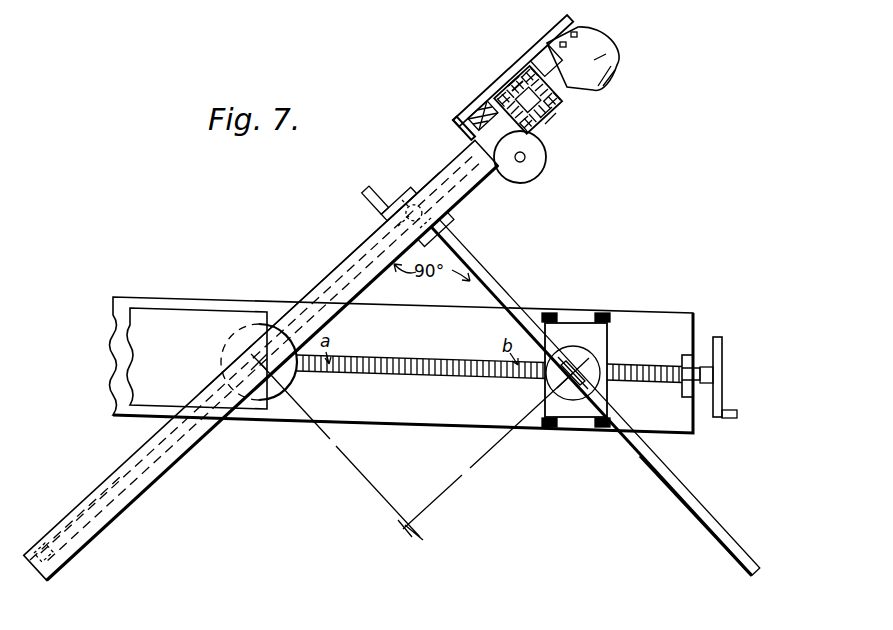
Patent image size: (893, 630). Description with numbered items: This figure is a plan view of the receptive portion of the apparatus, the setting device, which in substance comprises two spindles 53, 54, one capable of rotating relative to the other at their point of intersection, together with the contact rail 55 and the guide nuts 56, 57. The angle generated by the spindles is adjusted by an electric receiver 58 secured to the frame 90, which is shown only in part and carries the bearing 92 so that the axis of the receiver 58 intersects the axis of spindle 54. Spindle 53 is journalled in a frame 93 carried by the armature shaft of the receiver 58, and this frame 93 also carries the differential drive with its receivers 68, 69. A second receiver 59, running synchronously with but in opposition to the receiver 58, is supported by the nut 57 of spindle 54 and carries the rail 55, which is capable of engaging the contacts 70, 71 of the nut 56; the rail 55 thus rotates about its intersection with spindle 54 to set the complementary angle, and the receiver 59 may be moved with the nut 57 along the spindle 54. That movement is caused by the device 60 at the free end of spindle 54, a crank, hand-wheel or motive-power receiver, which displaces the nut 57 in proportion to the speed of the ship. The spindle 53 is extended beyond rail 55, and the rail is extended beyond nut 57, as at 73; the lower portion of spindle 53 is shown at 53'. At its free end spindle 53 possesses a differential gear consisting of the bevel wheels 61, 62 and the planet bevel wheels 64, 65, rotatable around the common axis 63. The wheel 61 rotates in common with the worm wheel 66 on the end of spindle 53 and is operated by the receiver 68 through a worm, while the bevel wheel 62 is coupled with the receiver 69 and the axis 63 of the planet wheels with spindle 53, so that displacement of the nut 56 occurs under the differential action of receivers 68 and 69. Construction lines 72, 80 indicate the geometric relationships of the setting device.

The spindle 53 is at (261, 360).
The swing arm extension 53' is at (75, 509).
The spindle 54 is at (405, 379).
The contact rail 55 is at (506, 298).
The guide nut 56 is at (450, 215).
The guide nut 57 is at (576, 325).
The electric receiver 58 is at (262, 402).
The second receiver 59 is at (571, 402).
The device 60 is at (718, 398).
The bevel wheel 61 is at (486, 110).
The bevel wheel 62 is at (563, 103).
The common axis 63 is at (560, 112).
The planet bevel wheel 64 is at (516, 80).
The planet bevel wheel 65 is at (555, 128).
The worm wheel 66 is at (462, 118).
The receiver 68 is at (536, 163).
The receiver 69 is at (618, 66).
The contact 70 is at (425, 195).
The contact 71 is at (388, 213).
The center line 72 is at (358, 470).
The extension of rail 73 is at (677, 488).
The center line 80 is at (455, 483).
The frame 90 is at (180, 303).
The bearing 92 is at (688, 366).
The frame 93 is at (367, 237).